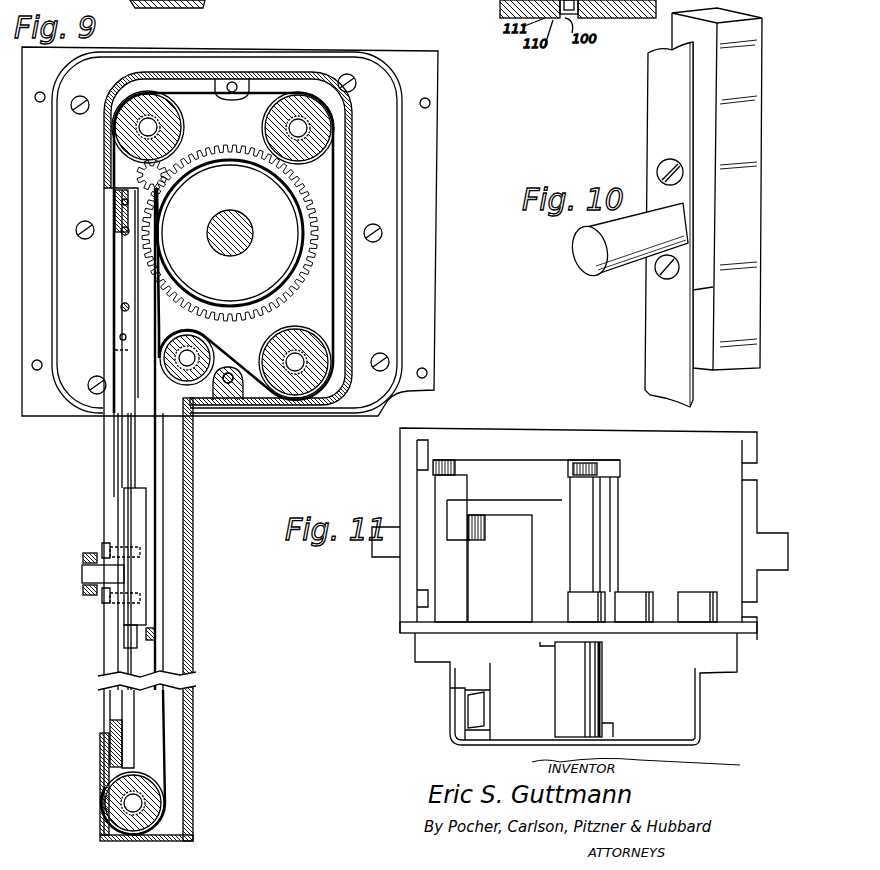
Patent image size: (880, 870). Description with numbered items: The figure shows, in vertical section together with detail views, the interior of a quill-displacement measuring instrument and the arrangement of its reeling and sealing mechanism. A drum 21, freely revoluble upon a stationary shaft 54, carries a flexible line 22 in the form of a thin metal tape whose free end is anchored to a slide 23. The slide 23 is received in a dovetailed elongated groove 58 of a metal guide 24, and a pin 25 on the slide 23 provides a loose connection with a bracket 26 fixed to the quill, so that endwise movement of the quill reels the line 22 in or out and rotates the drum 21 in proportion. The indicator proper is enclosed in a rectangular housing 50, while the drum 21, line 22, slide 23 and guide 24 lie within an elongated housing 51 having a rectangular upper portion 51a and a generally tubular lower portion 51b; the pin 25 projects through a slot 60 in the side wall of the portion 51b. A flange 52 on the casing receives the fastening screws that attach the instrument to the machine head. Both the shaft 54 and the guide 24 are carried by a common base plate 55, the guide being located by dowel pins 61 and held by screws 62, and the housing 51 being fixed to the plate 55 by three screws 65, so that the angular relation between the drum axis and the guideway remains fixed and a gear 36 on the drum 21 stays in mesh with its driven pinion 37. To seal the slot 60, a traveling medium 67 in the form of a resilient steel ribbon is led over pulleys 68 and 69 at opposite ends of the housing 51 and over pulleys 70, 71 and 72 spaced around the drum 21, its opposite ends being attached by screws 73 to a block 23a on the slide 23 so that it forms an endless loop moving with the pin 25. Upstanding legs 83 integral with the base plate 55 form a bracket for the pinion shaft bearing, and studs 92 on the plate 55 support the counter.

In FIG. 9, the drum 21 is at (290, 208).
In FIG. 9, the flexible line 22 is at (159, 321).
In FIG. 9, the slide 23 is at (130, 506).
In FIG. 10, the slide 23 is at (760, 142).
In FIG. 9, the block 23a is at (120, 630).
In FIG. 10, the block 23a is at (715, 231).
In FIG. 9, the guide 24 is at (110, 741).
In FIG. 11, the guide 24 is at (470, 688).
In FIG. 9, the pin 25 is at (86, 576).
In FIG. 10, the pin 25 is at (600, 270).
In FIG. 9, the bracket 26 is at (83, 556).
In FIG. 9, the gear 36 is at (212, 152).
In FIG. 9, the driven pinion 37 is at (141, 177).
In FIG. 11, the rectangular housing 50 is at (392, 620).
In FIG. 9, the elongated housing 51 is at (358, 203).
In FIG. 11, the elongated housing 51 is at (706, 722).
In FIG. 9, the upper portion of housing 51a is at (352, 176).
In FIG. 9, the lower portion of housing 51b is at (192, 608).
In FIG. 9, the flange 52 is at (230, 242).
In FIG. 9, the stationary shaft 54 is at (237, 216).
In FIG. 11, the stationary shaft 54 is at (602, 693).
In FIG. 9, the base plate 55 is at (387, 102).
In FIG. 9, the elongated groove 58 is at (128, 446).
In FIG. 9, the slot 60 is at (118, 464).
In FIG. 9, the dowel pins 61 is at (115, 200).
In FIG. 9, the screws 62 is at (121, 206).
In FIG. 9, the screws 65 is at (86, 240).
In FIG. 9, the traveling medium 67 is at (112, 497).
In FIG. 10, the traveling medium 67 is at (648, 110).
In FIG. 9, the pulley 68 is at (110, 803).
In FIG. 9, the pulley 69 is at (176, 120).
In FIG. 9, the pulley 70 is at (268, 125).
In FIG. 9, the pulley 71 is at (301, 336).
In FIG. 9, the pulley 72 is at (210, 345).
In FIG. 9, the screws 73 is at (104, 544).
In FIG. 10, the screws 73 is at (657, 168).
In FIG. 11, the upstanding legs 83 is at (437, 576).
In FIG. 11, the studs 92 is at (663, 594).